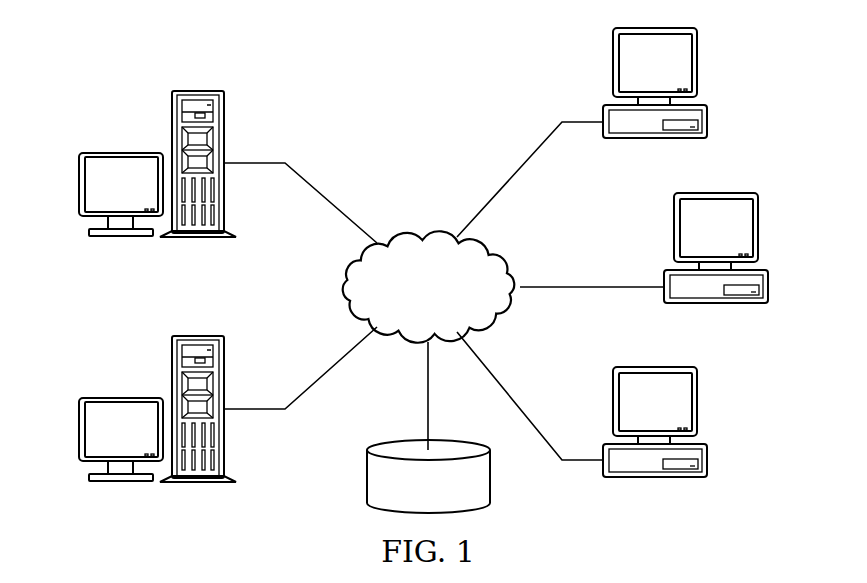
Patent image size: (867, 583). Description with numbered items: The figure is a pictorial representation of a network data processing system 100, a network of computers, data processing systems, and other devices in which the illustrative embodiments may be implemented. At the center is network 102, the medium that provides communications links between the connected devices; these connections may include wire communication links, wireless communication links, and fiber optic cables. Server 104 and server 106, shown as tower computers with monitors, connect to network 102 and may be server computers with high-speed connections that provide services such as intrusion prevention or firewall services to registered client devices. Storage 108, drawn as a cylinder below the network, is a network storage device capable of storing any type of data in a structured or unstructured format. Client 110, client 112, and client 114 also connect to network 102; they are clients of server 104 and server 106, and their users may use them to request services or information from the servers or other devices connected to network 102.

The network data processing system 100 is at (290, 65).
The network 102 is at (420, 231).
The server 104 is at (79, 181).
The server 106 is at (79, 428).
The storage 108 is at (367, 473).
The client 110 is at (708, 115).
The client 112 is at (770, 278).
The client 114 is at (707, 467).